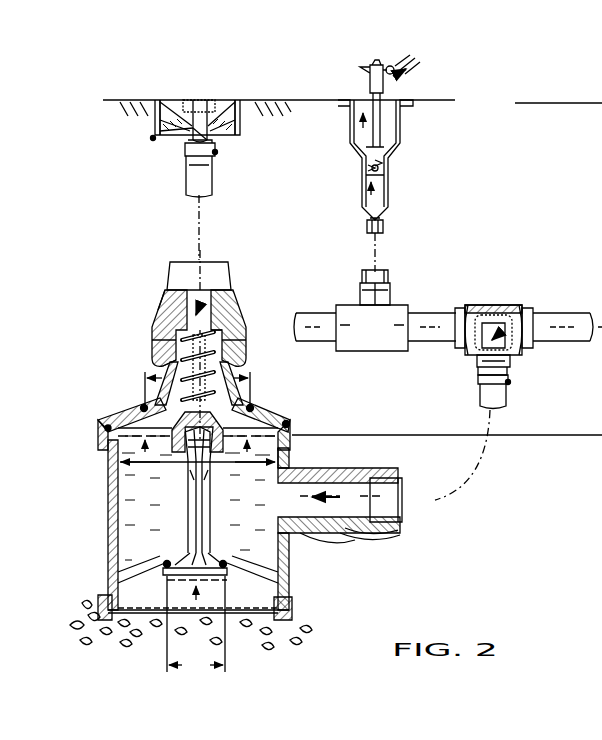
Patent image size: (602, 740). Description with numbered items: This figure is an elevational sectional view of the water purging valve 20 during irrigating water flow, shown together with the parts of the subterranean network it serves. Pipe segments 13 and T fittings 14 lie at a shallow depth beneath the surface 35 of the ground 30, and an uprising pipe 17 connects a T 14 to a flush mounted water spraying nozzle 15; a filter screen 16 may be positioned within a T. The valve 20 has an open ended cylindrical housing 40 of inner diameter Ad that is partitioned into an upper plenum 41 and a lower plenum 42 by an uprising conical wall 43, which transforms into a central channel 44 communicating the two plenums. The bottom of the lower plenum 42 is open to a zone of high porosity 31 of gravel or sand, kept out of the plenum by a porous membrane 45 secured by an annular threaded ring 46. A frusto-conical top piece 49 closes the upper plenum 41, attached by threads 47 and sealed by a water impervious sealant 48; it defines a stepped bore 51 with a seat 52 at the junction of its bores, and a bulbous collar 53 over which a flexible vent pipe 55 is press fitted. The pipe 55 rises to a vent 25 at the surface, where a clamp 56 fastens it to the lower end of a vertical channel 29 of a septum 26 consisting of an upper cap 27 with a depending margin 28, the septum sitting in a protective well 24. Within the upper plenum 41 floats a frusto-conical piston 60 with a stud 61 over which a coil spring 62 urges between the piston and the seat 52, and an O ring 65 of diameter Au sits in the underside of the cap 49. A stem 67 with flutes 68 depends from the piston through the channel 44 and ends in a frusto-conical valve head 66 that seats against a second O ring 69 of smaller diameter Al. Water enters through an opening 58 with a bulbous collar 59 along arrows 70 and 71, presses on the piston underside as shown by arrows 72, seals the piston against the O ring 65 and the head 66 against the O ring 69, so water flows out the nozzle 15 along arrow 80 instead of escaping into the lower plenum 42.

The pipe segments 13 is at (300, 312).
The T fitting 14 is at (482, 306).
The water spraying nozzle 15 is at (392, 172).
The filter screen 16 is at (500, 322).
The uprising pipe 17 is at (386, 228).
The water purging valve 20 is at (294, 570).
The well 24 is at (238, 100).
The vent 25 is at (151, 140).
The septum 26 is at (197, 98).
The upper cap 27 is at (210, 96).
The depending margin 28 is at (183, 110).
The vertical channel 29 is at (193, 135).
The ground 30 is at (246, 181).
The zone of high porosity 31 is at (298, 622).
The ground surface 35 is at (103, 98).
The cylindrical housing 40 is at (294, 592).
The upper plenum 41 is at (157, 495).
The lower plenum 42 is at (257, 597).
The conical wall 43 is at (185, 555).
The central channel 44 is at (195, 518).
The porous membrane 45 is at (150, 630).
The annular threaded ring 46 is at (102, 632).
The threads 47 is at (283, 445).
The water impervious sealant 48 is at (291, 424).
The frusto-conical top piece 49 is at (270, 412).
The stepped bore 51 is at (225, 296).
The seat 52 is at (184, 336).
The bulbous collar 53 is at (222, 320).
The flexible vent pipe 55 is at (190, 190).
The clamp 56 is at (220, 152).
The channel communicating opening 58 is at (340, 544).
The bulbous collar 59 is at (375, 540).
The frusto-conical piston 60 is at (100, 424).
The stud 61 is at (160, 368).
The coil spring 62 is at (232, 360).
The O ring 65 is at (140, 408).
The frusto-conical valve head 66 is at (207, 575).
The stem 67 is at (330, 468).
The flutes 68 is at (186, 530).
The second O ring 69 is at (163, 566).
The water flow arrow 70 is at (515, 364).
The water flow arrow 71 is at (375, 490).
The pressure arrows 72 is at (140, 447).
The water discharge arrow 80 is at (410, 55).
The upper O ring diameter Au is at (252, 378).
The housing inner diameter Ad is at (231, 457).
The lower O ring diameter Al is at (196, 624).